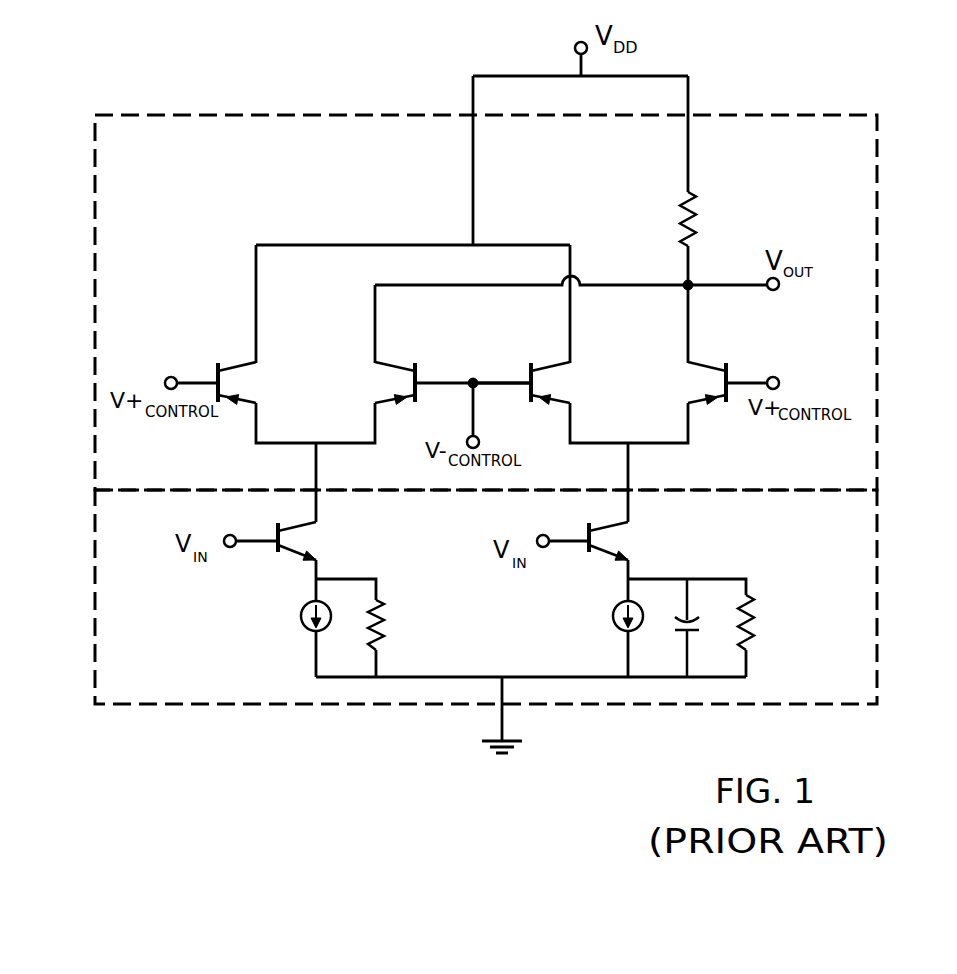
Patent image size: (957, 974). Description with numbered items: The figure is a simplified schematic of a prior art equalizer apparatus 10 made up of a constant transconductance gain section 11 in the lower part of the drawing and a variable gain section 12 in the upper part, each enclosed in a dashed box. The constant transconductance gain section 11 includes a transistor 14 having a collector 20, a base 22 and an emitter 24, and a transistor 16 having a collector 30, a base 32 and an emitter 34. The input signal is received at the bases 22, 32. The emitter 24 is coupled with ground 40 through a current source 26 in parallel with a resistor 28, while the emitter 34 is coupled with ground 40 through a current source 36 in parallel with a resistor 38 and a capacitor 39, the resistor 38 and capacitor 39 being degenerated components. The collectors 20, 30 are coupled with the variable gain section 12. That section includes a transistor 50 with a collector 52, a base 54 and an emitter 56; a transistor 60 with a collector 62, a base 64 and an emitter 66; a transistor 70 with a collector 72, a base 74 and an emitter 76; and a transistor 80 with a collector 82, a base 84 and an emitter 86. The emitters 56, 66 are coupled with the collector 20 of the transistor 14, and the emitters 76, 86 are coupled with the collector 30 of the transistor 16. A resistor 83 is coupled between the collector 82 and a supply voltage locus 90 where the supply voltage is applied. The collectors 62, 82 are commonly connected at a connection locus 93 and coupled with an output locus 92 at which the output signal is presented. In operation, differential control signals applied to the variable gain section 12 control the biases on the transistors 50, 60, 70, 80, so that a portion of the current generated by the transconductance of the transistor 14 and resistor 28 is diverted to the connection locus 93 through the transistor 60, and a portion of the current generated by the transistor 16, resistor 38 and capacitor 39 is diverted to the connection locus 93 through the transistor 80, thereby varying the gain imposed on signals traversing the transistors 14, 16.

The equalizer apparatus 10 is at (246, 777).
The constant transconductance gain section 11 is at (93, 622).
The variable gain section 12 is at (286, 114).
The transistor 14 is at (292, 547).
The transistor 16 is at (594, 547).
The collector 20 is at (302, 520).
The base 22 is at (262, 548).
The emitter 24 is at (283, 556).
The current source 26 is at (303, 620).
The resistor 28 is at (380, 637).
The collector 30 is at (617, 522).
The base 32 is at (566, 537).
The emitter 34 is at (601, 556).
The current source 36 is at (619, 627).
The resistor 38 is at (750, 620).
The capacitor 39 is at (697, 633).
The ground 40 is at (515, 741).
The transistor 50 is at (237, 386).
The collector 52 is at (243, 368).
The base 54 is at (206, 380).
The emitter 56 is at (242, 399).
The transistor 60 is at (433, 384).
The collector 62 is at (400, 367).
The base 64 is at (445, 382).
The emitter 66 is at (397, 398).
The transistor 70 is at (548, 383).
The collector 72 is at (553, 366).
The base 74 is at (507, 385).
The emitter 76 is at (550, 399).
The transistor 80 is at (712, 381).
The collector 82 is at (718, 367).
The base 84 is at (747, 380).
The emitter 86 is at (718, 395).
The resistor 83 is at (680, 222).
The supply voltage locus 90 is at (576, 44).
The output locus 92 is at (778, 289).
The connection locus 93 is at (691, 285).